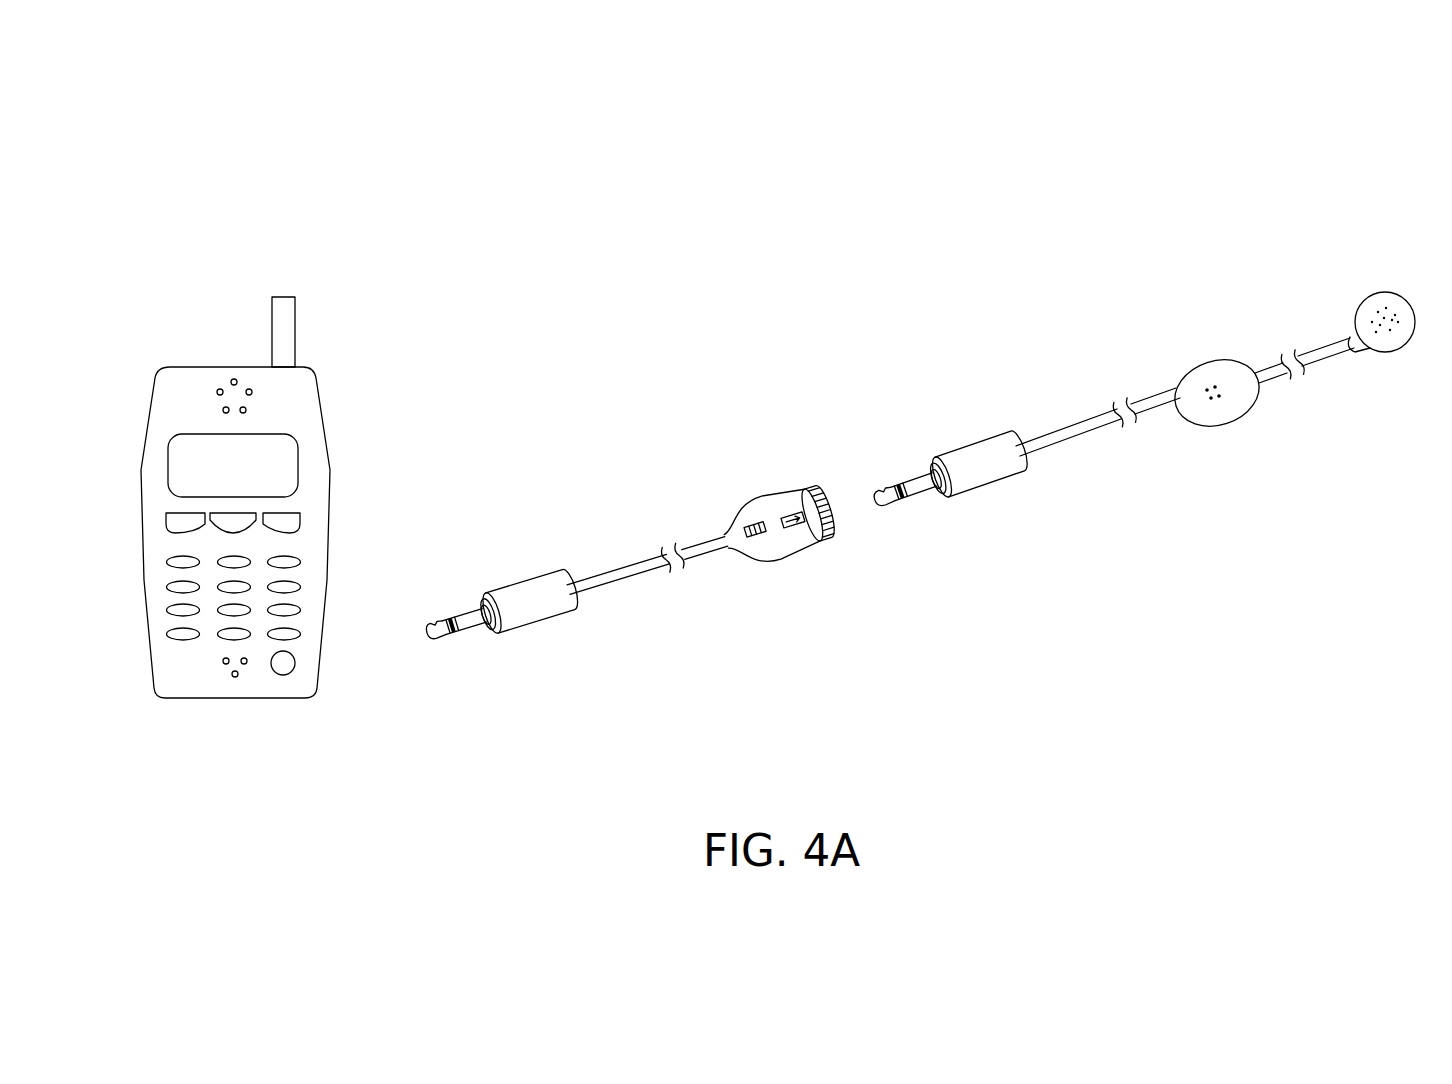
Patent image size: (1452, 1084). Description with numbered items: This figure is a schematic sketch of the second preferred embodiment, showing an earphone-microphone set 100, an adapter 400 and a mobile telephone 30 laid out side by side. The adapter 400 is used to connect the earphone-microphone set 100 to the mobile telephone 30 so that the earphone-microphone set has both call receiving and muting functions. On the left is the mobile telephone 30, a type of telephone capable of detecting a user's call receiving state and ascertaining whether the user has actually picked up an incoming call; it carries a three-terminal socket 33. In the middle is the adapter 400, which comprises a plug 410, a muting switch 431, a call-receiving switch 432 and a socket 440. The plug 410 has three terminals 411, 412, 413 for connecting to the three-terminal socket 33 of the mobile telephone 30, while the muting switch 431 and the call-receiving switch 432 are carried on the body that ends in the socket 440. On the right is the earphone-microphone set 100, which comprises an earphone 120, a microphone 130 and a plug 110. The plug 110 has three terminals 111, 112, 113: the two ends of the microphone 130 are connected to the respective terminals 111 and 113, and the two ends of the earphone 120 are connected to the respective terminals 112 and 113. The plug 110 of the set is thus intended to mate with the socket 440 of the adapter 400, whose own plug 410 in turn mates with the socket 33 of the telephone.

The mobile telephone 30 is at (235, 541).
The three-terminal socket 33 is at (285, 675).
The earphone-microphone set 100 is at (1101, 284).
The plug 110 is at (950, 517).
The terminal 111 is at (883, 496).
The terminal 112 is at (914, 487).
The terminal 113 is at (978, 464).
The earphone 120 is at (1397, 352).
The microphone 130 is at (1212, 406).
The adapter 400 is at (631, 433).
The plug 410 is at (496, 645).
The terminal 411 is at (436, 630).
The terminal 412 is at (464, 622).
The terminal 413 is at (528, 601).
The muting switch 431 is at (755, 529).
The call-receiving switch 432 is at (793, 520).
The socket 440 is at (794, 521).